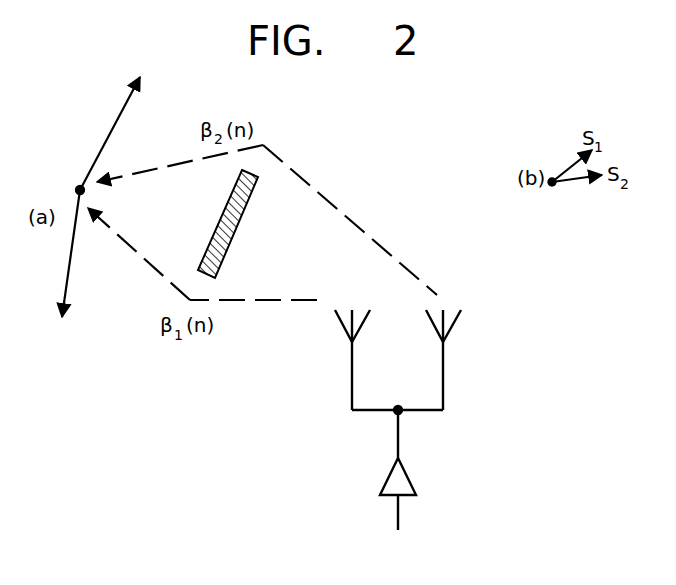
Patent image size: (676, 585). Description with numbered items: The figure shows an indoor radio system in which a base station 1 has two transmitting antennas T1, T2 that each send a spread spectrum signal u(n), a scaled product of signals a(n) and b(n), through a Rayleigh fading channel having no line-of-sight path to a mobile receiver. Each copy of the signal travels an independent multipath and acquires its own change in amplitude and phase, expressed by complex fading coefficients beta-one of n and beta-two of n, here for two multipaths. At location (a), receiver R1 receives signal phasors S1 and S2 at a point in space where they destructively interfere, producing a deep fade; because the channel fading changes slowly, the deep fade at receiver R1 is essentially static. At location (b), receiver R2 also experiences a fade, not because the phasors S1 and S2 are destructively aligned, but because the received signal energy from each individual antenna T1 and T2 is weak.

The base station 1 is at (435, 417).
The first transmitting antenna T1 is at (346, 360).
The second transmitting antenna T2 is at (454, 360).
The first receiver R1 is at (68, 180).
The second receiver R2 is at (575, 186).
The first received signal phasor S1 is at (116, 118).
The second received signal phasor S2 is at (64, 270).